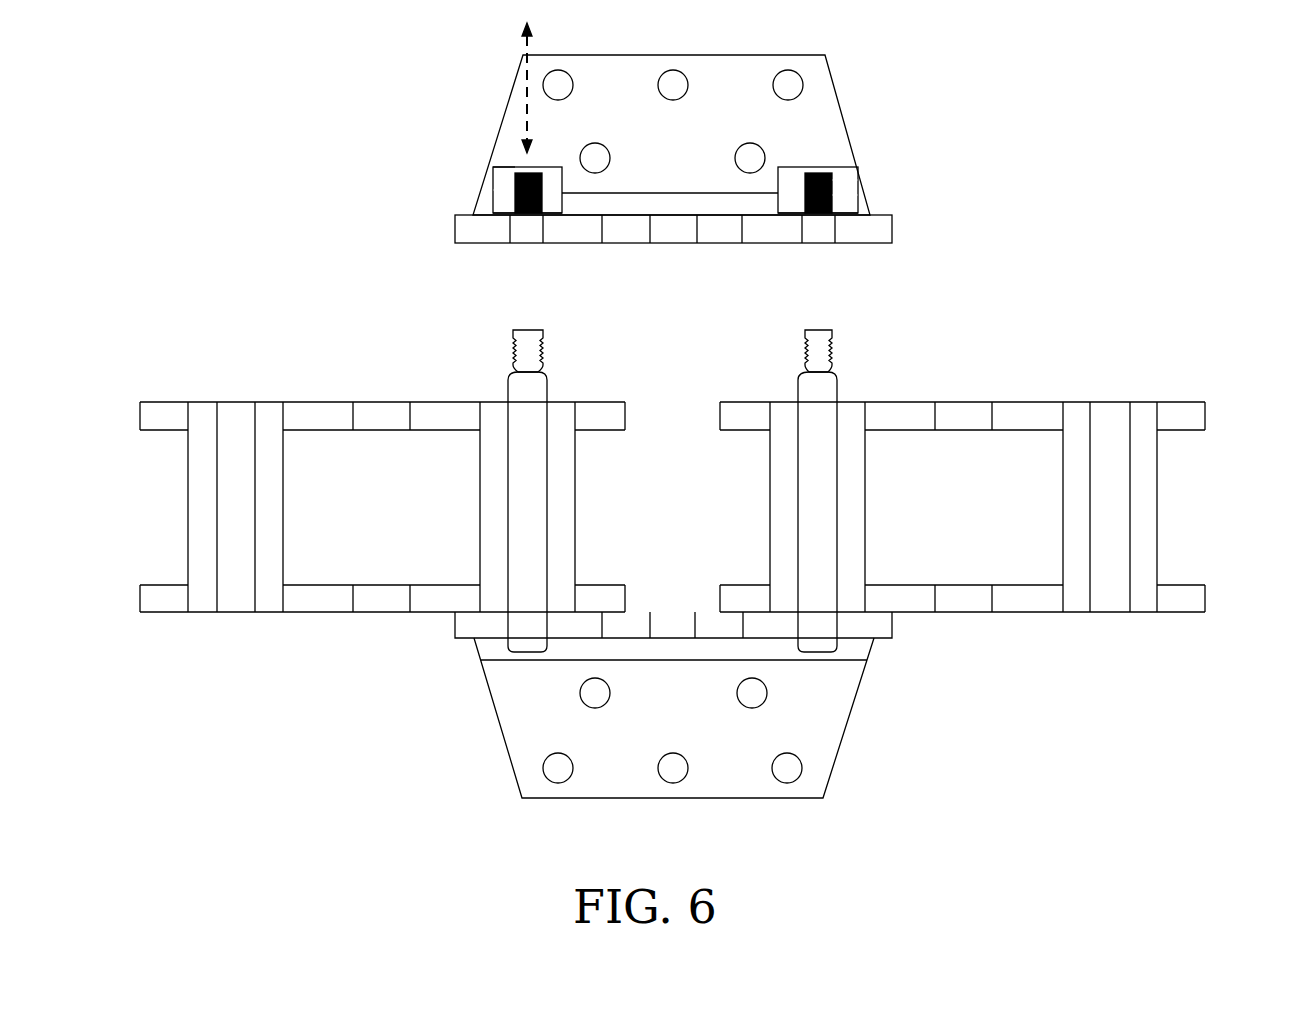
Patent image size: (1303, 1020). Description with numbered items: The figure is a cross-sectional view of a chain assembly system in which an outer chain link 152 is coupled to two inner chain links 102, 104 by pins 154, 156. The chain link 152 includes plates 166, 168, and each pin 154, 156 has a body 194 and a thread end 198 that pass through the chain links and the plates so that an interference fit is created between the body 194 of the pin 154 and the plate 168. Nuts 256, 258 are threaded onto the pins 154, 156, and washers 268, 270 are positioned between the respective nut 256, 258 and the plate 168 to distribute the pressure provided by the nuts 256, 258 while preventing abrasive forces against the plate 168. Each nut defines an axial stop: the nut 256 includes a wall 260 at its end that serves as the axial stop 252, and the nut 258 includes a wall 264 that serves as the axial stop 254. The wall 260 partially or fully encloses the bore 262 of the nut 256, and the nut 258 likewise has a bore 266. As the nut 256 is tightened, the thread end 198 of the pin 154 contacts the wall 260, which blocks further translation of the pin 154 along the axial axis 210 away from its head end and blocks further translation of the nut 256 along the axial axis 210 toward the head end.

The chain link 102 is at (194, 377).
The chain link 104 is at (1139, 377).
The chain link 152 is at (850, 50).
The pin 154 is at (530, 542).
The pin 156 is at (815, 508).
The plate 166 is at (483, 618).
The plate 168 is at (670, 237).
The body 194 is at (530, 467).
The thread end 198 is at (530, 343).
The axial axis 210 is at (527, 75).
The axial stop 252 is at (478, 163).
The axial stop 254 is at (850, 140).
The nut 256 is at (505, 182).
The nut 258 is at (840, 182).
The wall 260 is at (527, 167).
The bore 262 is at (513, 190).
The wall 264 is at (818, 167).
The bore 266 is at (838, 195).
The washer 268 is at (507, 213).
The washer 270 is at (845, 213).